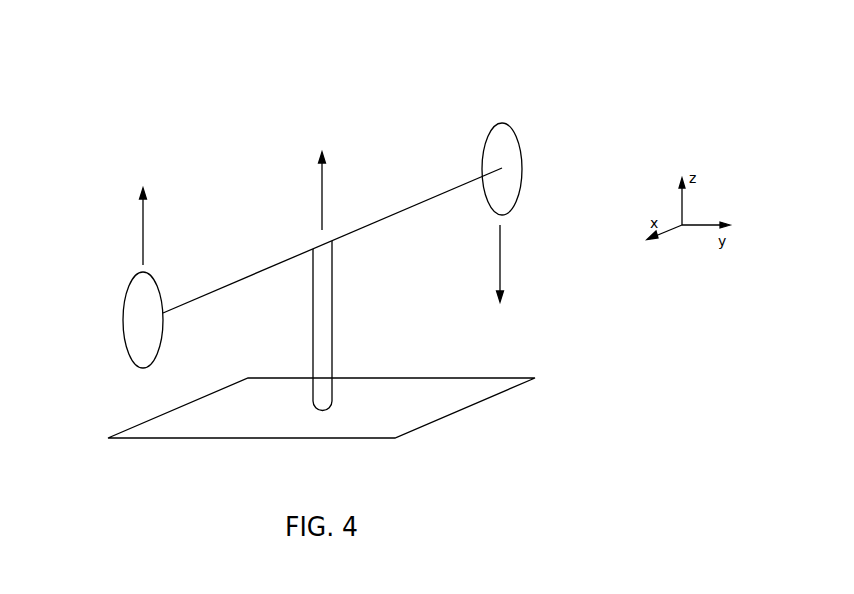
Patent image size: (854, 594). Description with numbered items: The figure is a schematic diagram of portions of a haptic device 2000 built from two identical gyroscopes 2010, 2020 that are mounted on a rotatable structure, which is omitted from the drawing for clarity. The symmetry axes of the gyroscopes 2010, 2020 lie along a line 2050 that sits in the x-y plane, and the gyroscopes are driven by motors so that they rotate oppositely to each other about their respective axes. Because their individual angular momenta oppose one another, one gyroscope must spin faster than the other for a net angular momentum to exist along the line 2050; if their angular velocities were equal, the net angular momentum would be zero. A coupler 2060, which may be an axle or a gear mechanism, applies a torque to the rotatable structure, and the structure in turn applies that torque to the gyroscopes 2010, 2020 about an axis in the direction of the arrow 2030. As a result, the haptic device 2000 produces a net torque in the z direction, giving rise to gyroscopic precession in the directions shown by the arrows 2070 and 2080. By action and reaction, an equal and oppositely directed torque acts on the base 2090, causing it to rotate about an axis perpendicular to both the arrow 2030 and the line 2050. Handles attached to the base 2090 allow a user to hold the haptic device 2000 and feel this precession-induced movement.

The haptic device 2000 is at (323, 246).
The gyroscope 2010 is at (135, 305).
The gyroscope 2020 is at (510, 148).
The arrow 2030 is at (322, 187).
The line 2050 is at (373, 225).
The coupler 2060 is at (332, 325).
The arrow 2070 is at (143, 222).
The arrow 2080 is at (500, 257).
The base 2090 is at (430, 410).